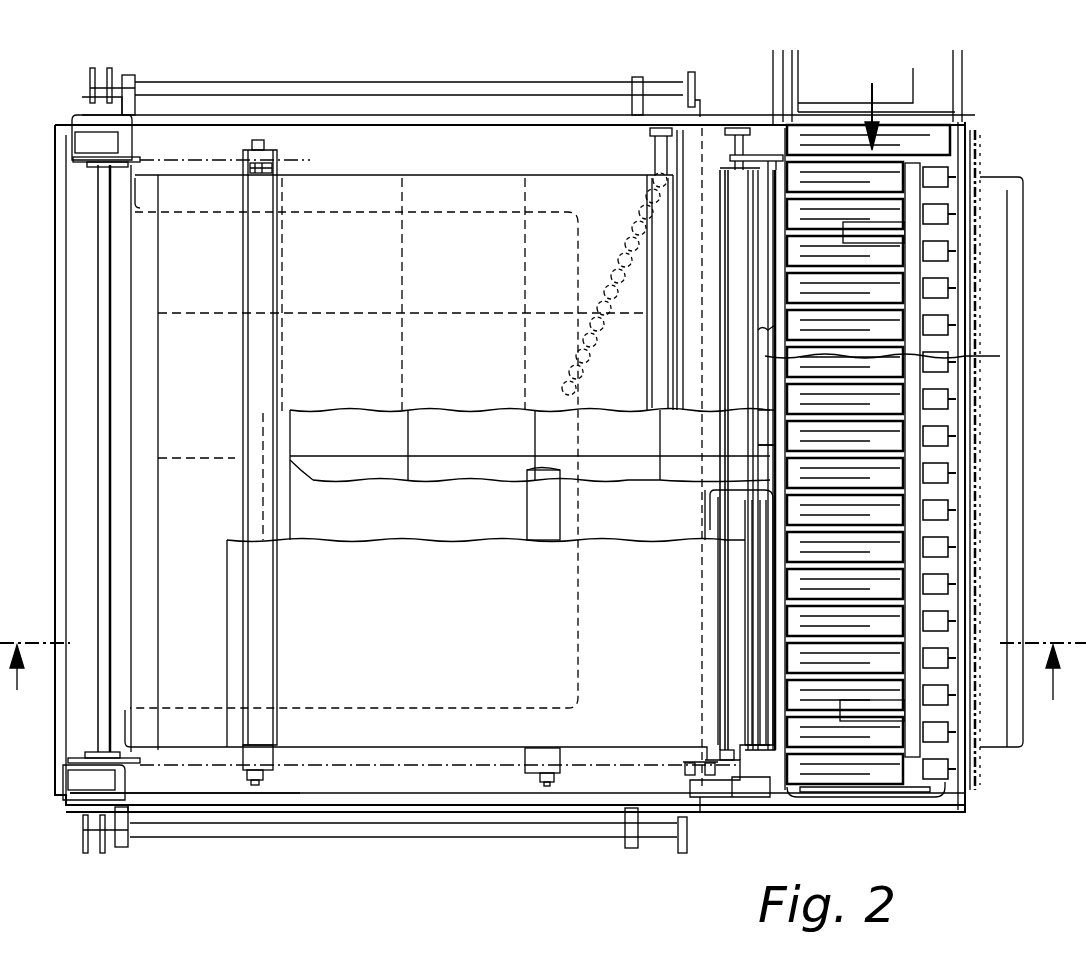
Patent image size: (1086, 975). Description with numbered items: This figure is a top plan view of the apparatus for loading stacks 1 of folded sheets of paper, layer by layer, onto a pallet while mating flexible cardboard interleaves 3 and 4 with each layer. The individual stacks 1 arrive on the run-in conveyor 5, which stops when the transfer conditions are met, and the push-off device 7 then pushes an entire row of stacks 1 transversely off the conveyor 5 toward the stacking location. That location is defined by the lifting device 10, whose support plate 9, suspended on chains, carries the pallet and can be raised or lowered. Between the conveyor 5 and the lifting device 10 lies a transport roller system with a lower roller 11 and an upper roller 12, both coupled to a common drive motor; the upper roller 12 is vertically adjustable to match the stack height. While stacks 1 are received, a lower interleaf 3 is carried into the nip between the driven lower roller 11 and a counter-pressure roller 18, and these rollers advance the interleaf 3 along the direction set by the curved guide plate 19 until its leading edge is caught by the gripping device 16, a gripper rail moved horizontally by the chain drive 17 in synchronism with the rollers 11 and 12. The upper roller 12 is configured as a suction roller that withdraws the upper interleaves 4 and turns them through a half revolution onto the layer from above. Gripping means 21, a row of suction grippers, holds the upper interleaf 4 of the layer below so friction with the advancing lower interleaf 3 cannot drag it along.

The stack of folded sheets of paper 1 is at (559, 303).
The lower interleaf 3 is at (140, 352).
The upper interleaf 4 is at (486, 608).
The run-in conveyor 5 is at (872, 757).
The push-off device 7 is at (910, 720).
The support plate 9 is at (288, 818).
The lifting device 10 is at (378, 840).
The lower roller 11 is at (726, 195).
The upper roller 12 is at (752, 740).
The gripping device 16 is at (263, 198).
The chain drive 17 is at (178, 765).
The counter-pressure roller 18 is at (770, 195).
The curved guide plate 19 is at (985, 356).
The gripping means 21 is at (658, 195).